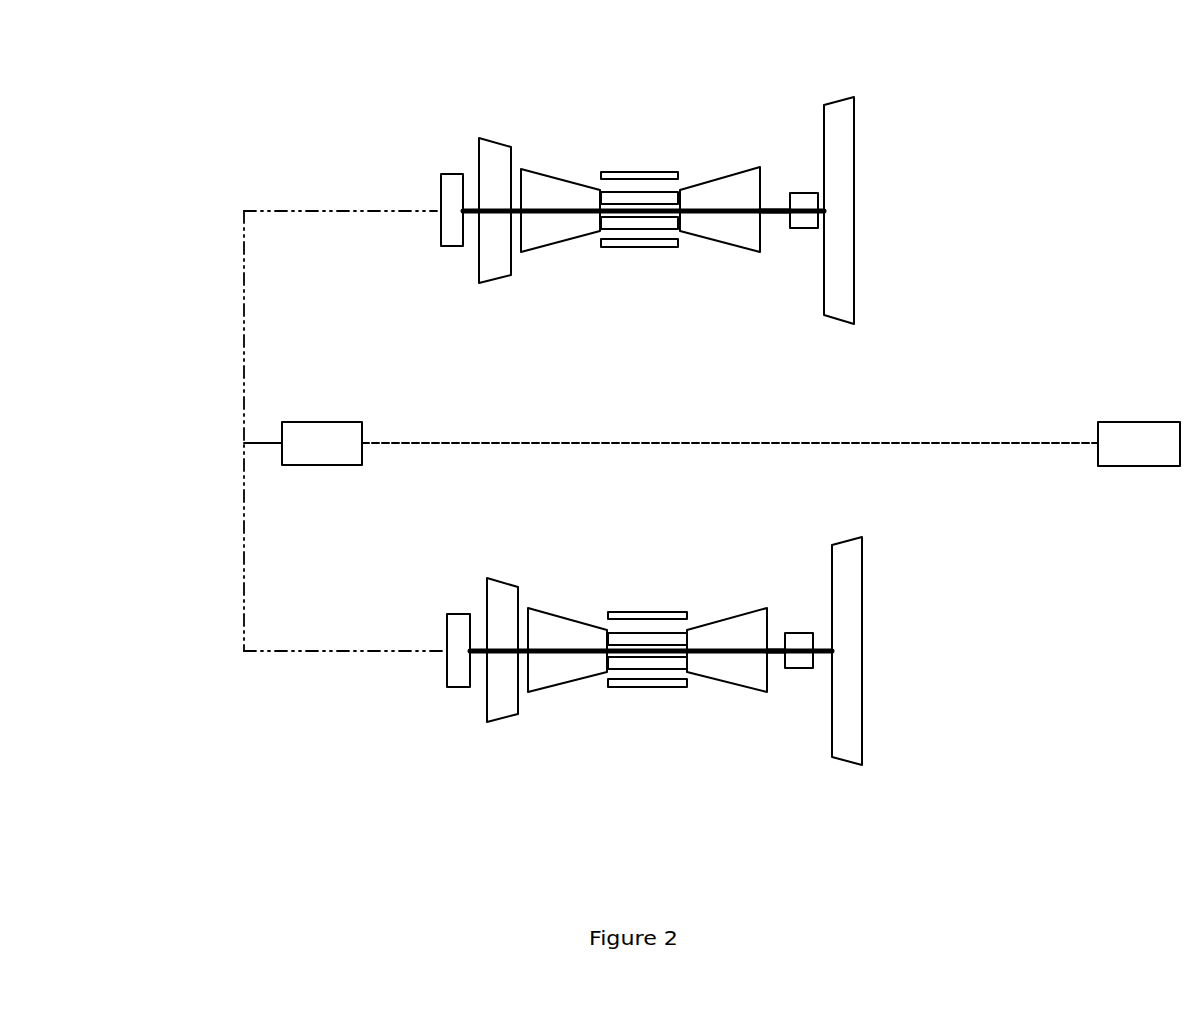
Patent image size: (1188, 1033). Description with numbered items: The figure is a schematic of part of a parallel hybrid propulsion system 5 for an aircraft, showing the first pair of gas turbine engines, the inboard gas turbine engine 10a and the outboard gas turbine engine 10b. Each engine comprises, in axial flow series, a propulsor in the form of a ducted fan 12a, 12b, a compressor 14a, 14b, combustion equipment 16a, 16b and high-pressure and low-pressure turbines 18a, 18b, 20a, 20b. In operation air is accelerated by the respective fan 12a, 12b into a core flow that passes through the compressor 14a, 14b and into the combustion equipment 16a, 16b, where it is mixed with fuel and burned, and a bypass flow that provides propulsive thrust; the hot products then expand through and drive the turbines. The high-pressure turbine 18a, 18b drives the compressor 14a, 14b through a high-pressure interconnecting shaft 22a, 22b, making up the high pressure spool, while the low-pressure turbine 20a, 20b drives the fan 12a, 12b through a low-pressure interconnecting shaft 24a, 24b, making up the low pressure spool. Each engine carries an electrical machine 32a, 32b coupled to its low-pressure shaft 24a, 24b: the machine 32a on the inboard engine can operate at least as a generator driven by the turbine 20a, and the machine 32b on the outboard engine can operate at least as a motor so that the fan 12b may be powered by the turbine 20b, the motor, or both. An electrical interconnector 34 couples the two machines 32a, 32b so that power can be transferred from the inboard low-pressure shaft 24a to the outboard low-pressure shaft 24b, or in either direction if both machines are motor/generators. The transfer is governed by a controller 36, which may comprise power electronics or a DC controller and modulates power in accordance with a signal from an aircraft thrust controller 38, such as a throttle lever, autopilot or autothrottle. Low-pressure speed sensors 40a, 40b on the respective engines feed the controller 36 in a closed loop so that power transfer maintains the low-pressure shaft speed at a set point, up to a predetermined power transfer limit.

The propulsion system 5 is at (310, 586).
The inboard gas turbine engine 10a is at (571, 600).
The outboard gas turbine engine 10b is at (500, 108).
The ducted fan 12a is at (862, 568).
The ducted fan 12b is at (855, 135).
The compressor 14a is at (725, 693).
The compressor 14b is at (718, 180).
The combustion equipment 16a is at (666, 688).
The combustion equipment 16b is at (640, 171).
The high-pressure turbine 18a is at (541, 693).
The high-pressure turbine 18b is at (558, 243).
The low-pressure turbine 20a is at (503, 722).
The low-pressure turbine 20b is at (493, 282).
The high-pressure interconnecting shaft 22a is at (613, 688).
The high-pressure interconnecting shaft 22b is at (655, 230).
The low-pressure interconnecting shaft 24a is at (730, 648).
The low-pressure interconnecting shaft 24b is at (785, 215).
The electrical machine 32a is at (461, 688).
The electrical machine 32b is at (453, 174).
The electrical interconnector 34 is at (235, 278).
The controller 36 is at (322, 422).
The aircraft thrust controller 38 is at (1138, 422).
The low-pressure speed sensor 40a is at (798, 633).
The low-pressure speed sensor 40b is at (803, 192).